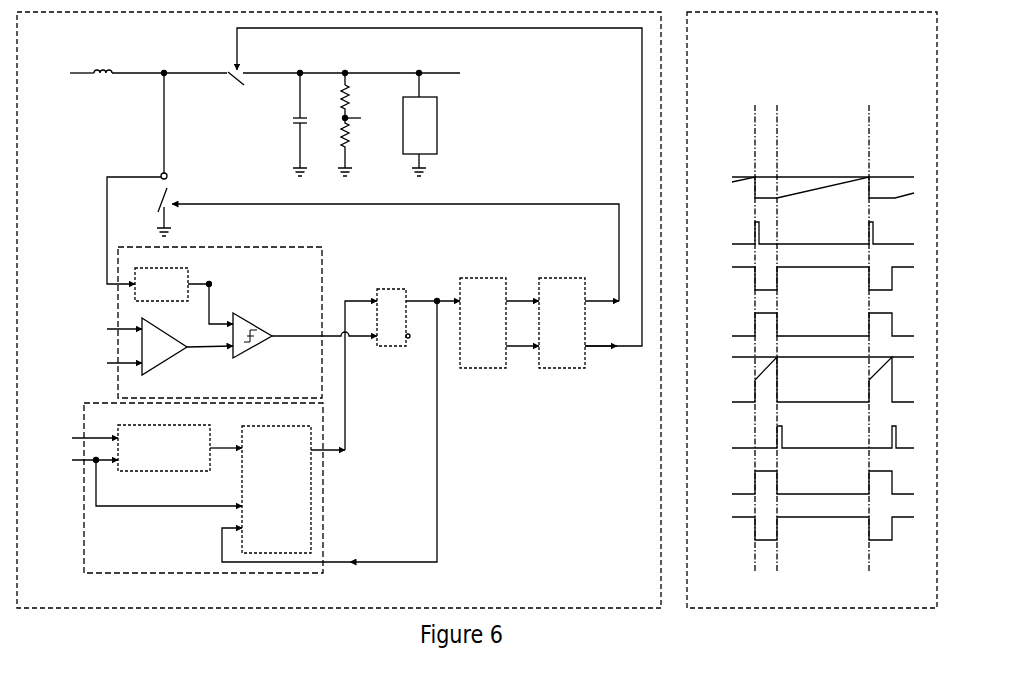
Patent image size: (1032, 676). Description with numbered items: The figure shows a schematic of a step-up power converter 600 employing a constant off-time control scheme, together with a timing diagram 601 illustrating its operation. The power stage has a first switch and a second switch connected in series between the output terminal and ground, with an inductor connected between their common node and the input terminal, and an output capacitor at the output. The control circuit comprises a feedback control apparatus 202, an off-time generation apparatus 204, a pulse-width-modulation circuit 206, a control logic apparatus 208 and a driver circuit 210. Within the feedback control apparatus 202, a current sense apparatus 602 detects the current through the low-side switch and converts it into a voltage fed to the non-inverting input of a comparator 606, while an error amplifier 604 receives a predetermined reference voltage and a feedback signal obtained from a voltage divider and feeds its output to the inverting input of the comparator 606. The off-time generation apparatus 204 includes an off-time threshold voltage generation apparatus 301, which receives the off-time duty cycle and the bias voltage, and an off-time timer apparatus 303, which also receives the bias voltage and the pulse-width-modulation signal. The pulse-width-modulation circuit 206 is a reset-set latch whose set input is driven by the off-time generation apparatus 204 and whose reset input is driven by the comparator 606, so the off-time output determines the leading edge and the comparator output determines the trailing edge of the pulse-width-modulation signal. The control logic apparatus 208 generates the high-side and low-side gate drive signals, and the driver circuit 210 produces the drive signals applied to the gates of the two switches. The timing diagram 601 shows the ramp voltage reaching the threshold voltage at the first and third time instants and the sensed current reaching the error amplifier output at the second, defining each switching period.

The step-up power converter 600 is at (646, 600).
The timing diagram 601 is at (926, 600).
The feedback control apparatus 202 is at (318, 270).
The off-time generation apparatus 204 is at (324, 425).
The PWM circuit 206 is at (392, 347).
The control logic apparatus 208 is at (486, 369).
The driver circuit 210 is at (565, 369).
The off-time threshold voltage generation apparatus 301 is at (157, 471).
The off-time timer apparatus 303 is at (297, 548).
The current sense apparatus 602 is at (175, 301).
The error amplifier 604 is at (158, 375).
The comparator 606 is at (252, 358).